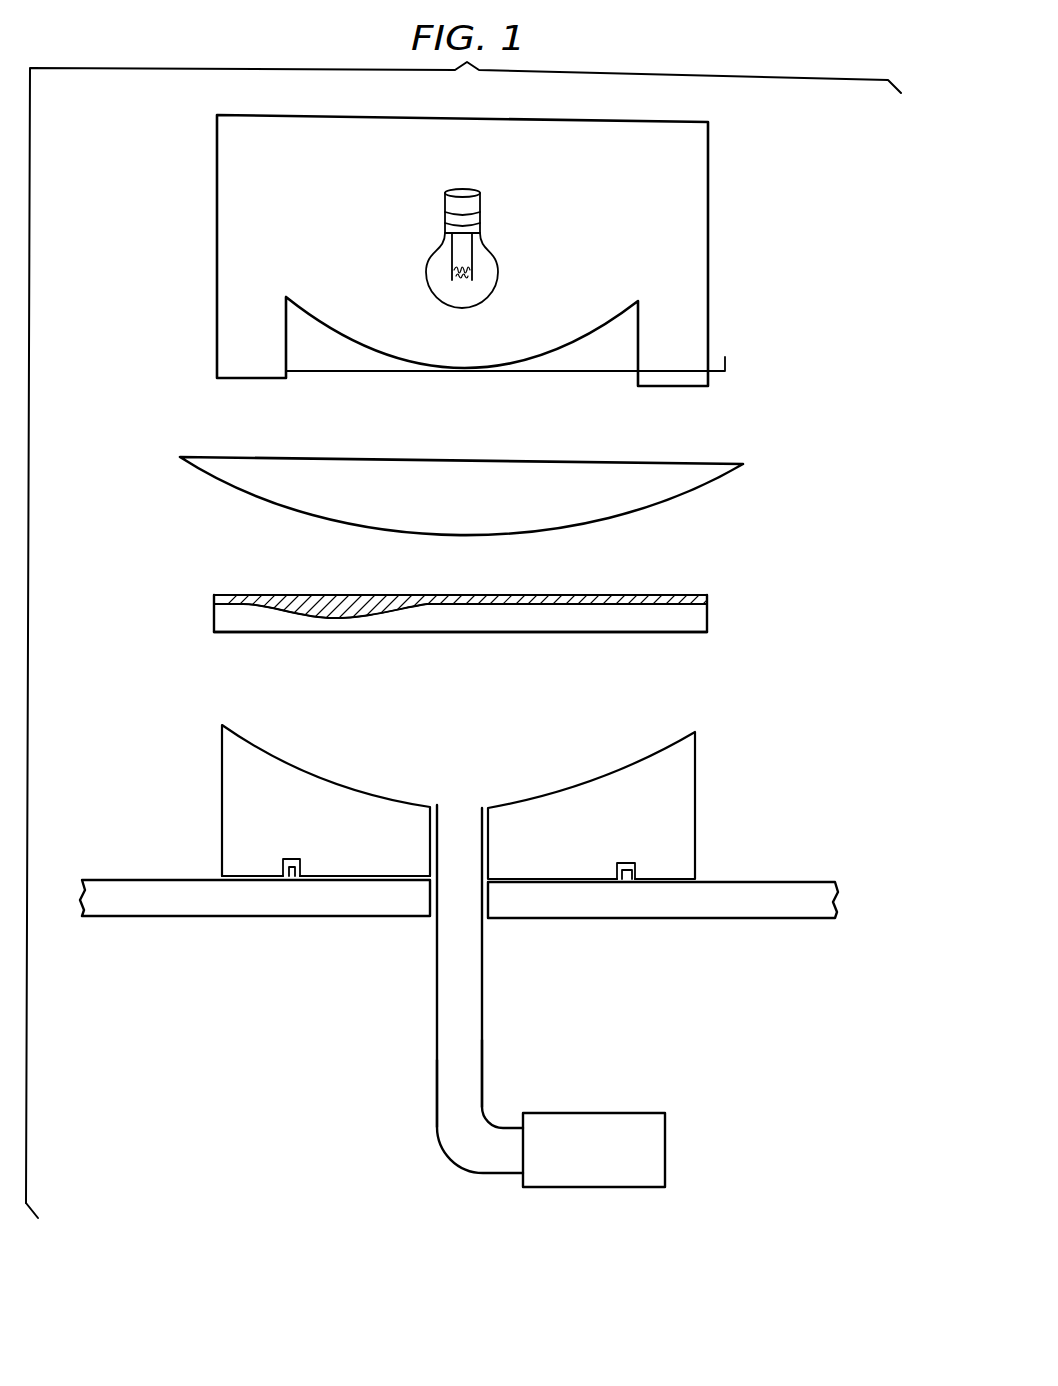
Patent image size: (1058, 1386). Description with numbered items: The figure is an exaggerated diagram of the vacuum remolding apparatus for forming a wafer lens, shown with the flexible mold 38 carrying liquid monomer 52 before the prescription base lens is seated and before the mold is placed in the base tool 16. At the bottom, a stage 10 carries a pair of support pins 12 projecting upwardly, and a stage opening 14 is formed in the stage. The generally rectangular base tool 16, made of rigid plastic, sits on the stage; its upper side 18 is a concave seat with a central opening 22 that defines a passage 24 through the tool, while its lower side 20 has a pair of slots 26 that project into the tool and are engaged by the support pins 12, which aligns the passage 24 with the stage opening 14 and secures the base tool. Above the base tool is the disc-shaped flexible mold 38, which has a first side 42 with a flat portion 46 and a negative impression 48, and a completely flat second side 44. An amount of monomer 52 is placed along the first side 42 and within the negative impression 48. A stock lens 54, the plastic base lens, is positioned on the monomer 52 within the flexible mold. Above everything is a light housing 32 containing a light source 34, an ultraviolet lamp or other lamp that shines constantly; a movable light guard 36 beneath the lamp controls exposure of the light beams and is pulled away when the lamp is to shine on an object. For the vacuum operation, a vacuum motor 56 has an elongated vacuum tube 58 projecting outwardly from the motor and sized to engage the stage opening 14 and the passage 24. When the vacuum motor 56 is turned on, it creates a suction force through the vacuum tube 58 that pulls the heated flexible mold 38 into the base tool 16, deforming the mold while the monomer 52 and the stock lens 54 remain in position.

The stage 10 is at (140, 916).
The support pins 12 is at (291, 878).
The stage opening 14 is at (489, 920).
The base tool 16 is at (222, 790).
The upper side 18 is at (610, 782).
The lower side 20 is at (243, 875).
The central opening 22 is at (483, 806).
The passage 24 is at (434, 802).
The slots 26 is at (637, 866).
The light housing 32 is at (709, 188).
The light source 34 is at (444, 229).
The light guard 36 is at (725, 367).
The flexible mold 38 is at (213, 628).
The first side 42 is at (680, 600).
The second side 44 is at (533, 634).
The flat portion 46 is at (572, 595).
The negative impression 48 is at (264, 605).
The monomer 52 is at (326, 595).
The stock lens 54 is at (199, 468).
The vacuum motor 56 is at (666, 1143).
The vacuum tube 58 is at (436, 1060).